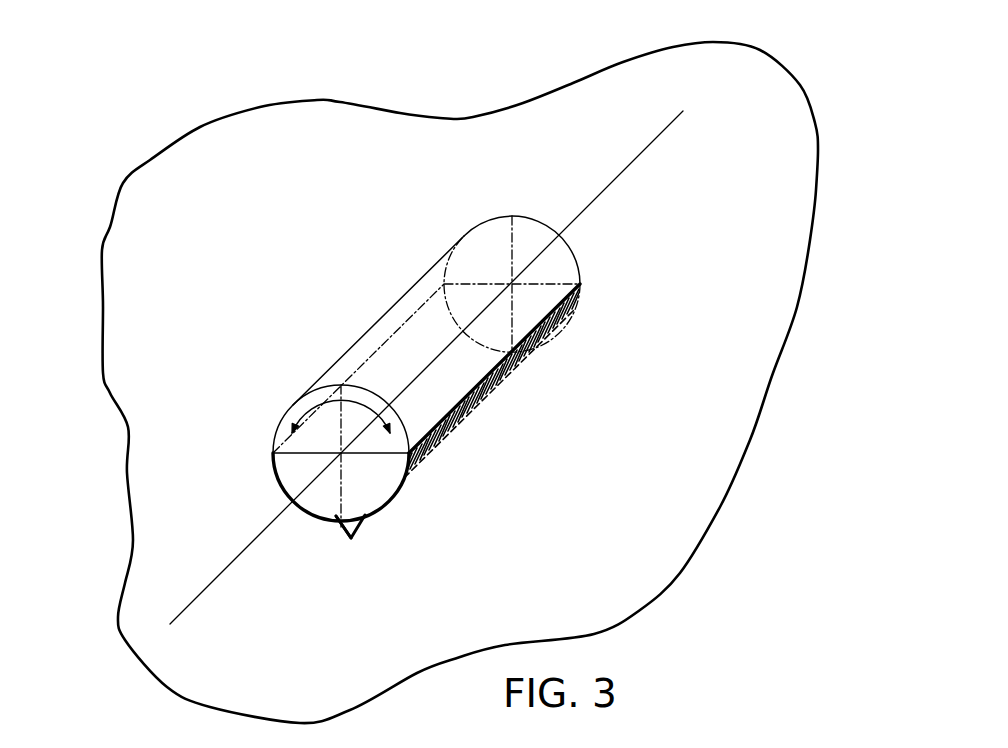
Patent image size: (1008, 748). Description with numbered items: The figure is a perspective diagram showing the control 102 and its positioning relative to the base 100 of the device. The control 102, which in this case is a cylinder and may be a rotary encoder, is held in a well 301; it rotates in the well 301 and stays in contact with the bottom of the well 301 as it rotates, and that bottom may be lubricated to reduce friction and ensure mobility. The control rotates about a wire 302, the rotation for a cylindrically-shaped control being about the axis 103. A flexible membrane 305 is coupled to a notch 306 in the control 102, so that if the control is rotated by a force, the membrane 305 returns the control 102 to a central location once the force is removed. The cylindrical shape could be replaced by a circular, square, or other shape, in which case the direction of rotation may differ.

The base 100 is at (717, 42).
The control 102 is at (528, 232).
The axis 103 is at (615, 180).
The well 301 is at (555, 336).
The wire 302 is at (205, 588).
The flexible membrane 305 is at (367, 520).
The notch 306 is at (330, 523).